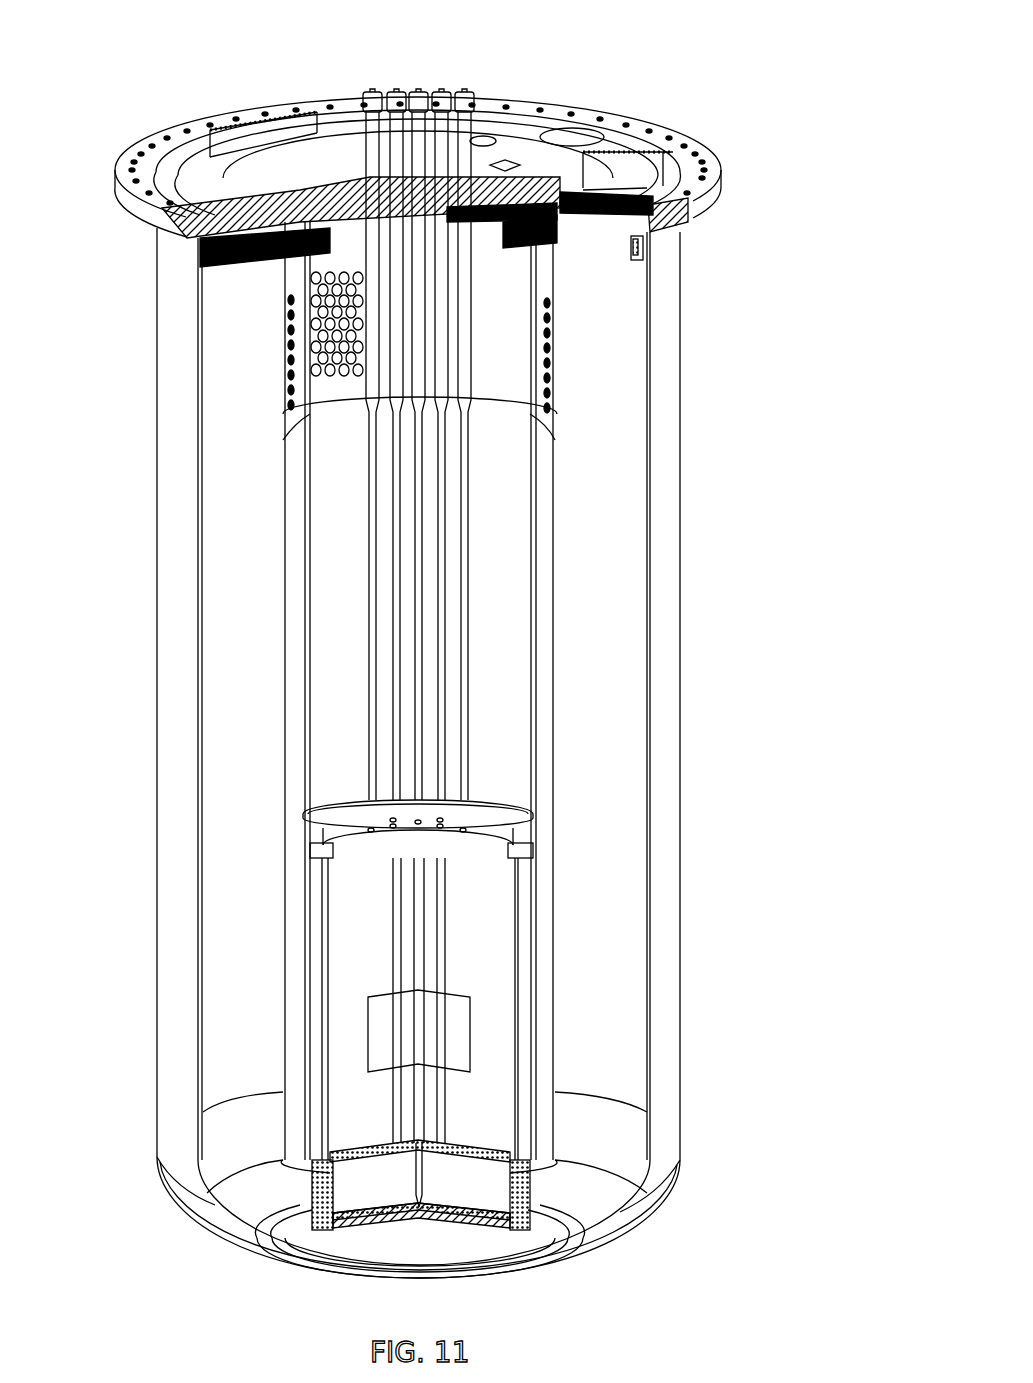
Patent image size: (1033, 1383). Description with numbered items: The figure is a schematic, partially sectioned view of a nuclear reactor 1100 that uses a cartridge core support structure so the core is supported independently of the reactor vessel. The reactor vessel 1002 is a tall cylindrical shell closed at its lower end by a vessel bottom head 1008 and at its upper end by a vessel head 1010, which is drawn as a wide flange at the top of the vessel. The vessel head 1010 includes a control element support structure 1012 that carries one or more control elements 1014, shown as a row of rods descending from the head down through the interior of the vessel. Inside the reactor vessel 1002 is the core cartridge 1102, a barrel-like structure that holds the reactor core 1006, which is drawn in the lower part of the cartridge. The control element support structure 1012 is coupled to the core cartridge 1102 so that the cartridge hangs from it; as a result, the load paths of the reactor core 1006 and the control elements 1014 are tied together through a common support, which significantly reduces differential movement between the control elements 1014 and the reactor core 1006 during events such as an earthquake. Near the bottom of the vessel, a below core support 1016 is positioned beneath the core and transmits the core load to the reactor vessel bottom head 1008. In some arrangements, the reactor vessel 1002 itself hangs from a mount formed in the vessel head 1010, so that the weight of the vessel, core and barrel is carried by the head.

The nuclear reactor 1100 is at (572, 60).
The reactor vessel 1002 is at (672, 378).
The vessel head 1010 is at (655, 133).
The control element support structure 1012 is at (500, 152).
The control elements 1014 is at (373, 127).
The core cartridge 1102 is at (553, 530).
The reactor core 1006 is at (430, 1025).
The below core support 1016 is at (310, 1203).
The vessel bottom head 1008 is at (607, 1252).